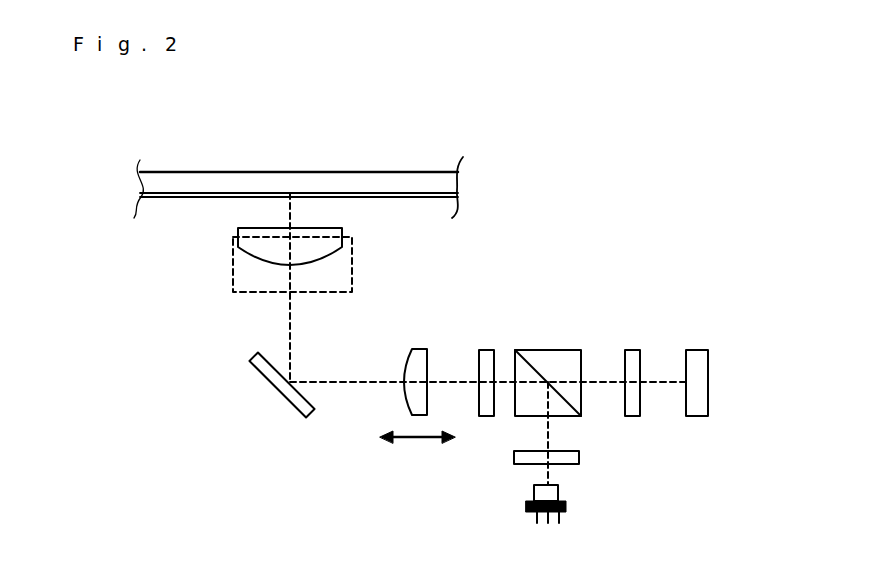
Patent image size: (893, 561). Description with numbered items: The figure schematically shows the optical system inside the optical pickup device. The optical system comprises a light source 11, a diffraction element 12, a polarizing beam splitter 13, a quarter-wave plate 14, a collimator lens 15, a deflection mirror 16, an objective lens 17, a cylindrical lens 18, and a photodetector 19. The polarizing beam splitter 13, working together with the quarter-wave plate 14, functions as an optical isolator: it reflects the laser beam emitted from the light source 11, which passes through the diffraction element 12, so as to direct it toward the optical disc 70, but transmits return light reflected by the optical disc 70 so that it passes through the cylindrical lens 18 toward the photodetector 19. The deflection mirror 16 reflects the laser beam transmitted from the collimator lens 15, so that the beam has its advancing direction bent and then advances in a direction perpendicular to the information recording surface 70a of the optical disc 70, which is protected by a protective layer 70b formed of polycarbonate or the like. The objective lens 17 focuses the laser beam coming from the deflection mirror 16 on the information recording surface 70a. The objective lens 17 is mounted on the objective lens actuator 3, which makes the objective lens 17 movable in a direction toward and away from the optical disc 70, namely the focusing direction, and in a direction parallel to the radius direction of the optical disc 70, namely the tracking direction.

The optical disc 70 is at (263, 172).
The information recording surface 70a is at (395, 193).
The protective layer 70b is at (190, 196).
The objective lens 17 is at (333, 238).
The objective lens actuator 3 is at (352, 271).
The deflection mirror 16 is at (283, 404).
The collimator lens 15 is at (425, 367).
The quarter-wave plate 14 is at (483, 350).
The polarizing beam splitter 13 is at (546, 350).
The cylindrical lens 18 is at (629, 350).
The photodetector 19 is at (702, 417).
The diffraction element 12 is at (579, 464).
The light source 11 is at (525, 508).